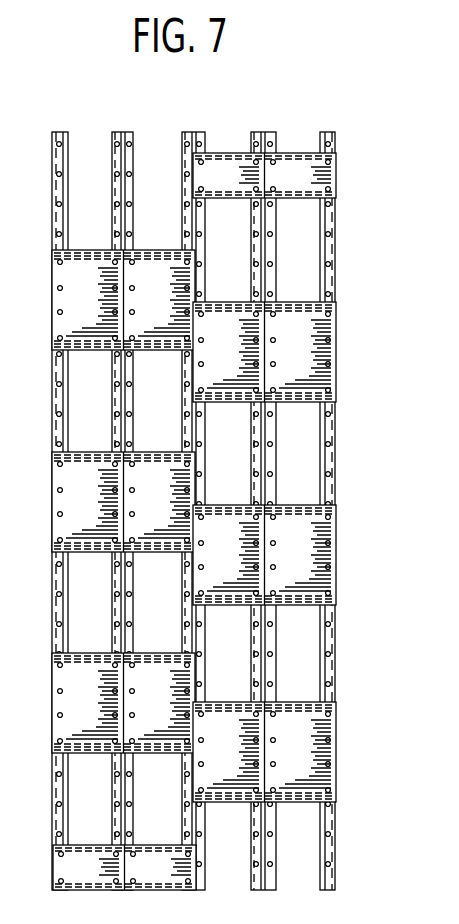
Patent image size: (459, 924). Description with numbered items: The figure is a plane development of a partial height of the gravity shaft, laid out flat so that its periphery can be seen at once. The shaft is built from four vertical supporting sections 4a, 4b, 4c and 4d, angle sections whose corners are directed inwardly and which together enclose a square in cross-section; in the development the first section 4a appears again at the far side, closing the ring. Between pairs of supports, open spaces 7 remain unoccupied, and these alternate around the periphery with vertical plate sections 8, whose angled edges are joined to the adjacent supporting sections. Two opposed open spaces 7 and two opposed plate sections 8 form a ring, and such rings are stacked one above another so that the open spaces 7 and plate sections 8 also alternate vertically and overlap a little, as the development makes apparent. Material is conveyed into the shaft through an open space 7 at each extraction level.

The vertical supporting section 4a is at (62, 132).
The vertical supporting section 4b is at (121, 132).
The vertical supporting section 4c is at (194, 132).
The vertical supporting section 4d is at (263, 132).
The open space 7 is at (200, 488).
The plate section 8 is at (309, 766).